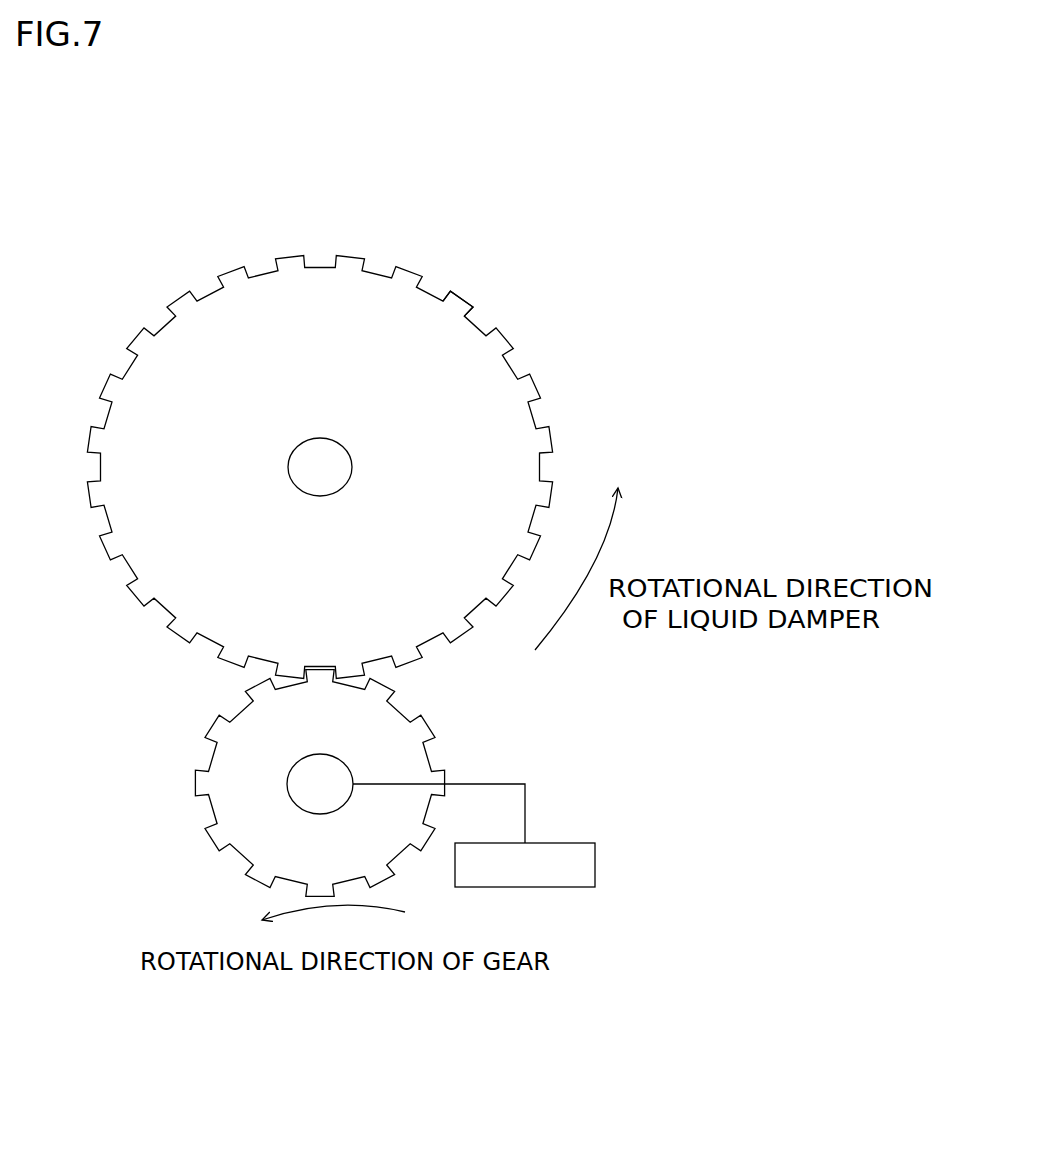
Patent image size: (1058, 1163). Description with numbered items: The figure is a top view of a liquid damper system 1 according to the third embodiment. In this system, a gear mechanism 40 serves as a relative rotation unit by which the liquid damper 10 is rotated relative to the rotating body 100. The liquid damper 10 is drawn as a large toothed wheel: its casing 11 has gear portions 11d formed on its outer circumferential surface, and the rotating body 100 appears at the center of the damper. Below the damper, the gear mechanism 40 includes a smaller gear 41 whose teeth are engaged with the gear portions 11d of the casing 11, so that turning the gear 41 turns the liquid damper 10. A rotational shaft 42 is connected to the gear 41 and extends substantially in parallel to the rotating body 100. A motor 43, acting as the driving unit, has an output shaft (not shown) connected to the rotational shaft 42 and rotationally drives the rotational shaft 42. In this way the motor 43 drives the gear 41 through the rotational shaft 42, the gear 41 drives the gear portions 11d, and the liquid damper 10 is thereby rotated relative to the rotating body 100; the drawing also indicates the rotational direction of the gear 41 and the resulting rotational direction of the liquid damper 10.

The liquid damper system 1 is at (102, 240).
The liquid damper 10 is at (207, 282).
The casing 11 is at (513, 388).
The gear portions 11d is at (478, 323).
The rotating body 100 is at (353, 466).
The gear mechanism 40 is at (472, 706).
The gear 41 is at (212, 722).
The rotational shaft 42 is at (297, 805).
The motor 43 is at (570, 845).